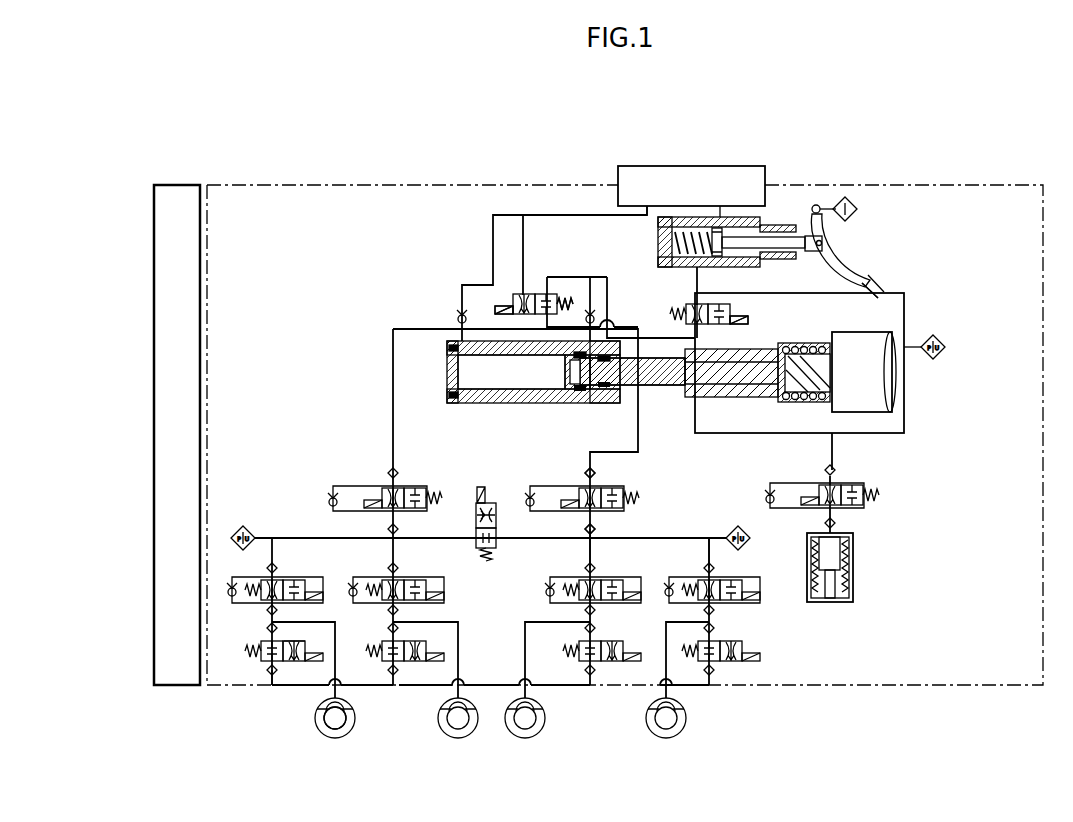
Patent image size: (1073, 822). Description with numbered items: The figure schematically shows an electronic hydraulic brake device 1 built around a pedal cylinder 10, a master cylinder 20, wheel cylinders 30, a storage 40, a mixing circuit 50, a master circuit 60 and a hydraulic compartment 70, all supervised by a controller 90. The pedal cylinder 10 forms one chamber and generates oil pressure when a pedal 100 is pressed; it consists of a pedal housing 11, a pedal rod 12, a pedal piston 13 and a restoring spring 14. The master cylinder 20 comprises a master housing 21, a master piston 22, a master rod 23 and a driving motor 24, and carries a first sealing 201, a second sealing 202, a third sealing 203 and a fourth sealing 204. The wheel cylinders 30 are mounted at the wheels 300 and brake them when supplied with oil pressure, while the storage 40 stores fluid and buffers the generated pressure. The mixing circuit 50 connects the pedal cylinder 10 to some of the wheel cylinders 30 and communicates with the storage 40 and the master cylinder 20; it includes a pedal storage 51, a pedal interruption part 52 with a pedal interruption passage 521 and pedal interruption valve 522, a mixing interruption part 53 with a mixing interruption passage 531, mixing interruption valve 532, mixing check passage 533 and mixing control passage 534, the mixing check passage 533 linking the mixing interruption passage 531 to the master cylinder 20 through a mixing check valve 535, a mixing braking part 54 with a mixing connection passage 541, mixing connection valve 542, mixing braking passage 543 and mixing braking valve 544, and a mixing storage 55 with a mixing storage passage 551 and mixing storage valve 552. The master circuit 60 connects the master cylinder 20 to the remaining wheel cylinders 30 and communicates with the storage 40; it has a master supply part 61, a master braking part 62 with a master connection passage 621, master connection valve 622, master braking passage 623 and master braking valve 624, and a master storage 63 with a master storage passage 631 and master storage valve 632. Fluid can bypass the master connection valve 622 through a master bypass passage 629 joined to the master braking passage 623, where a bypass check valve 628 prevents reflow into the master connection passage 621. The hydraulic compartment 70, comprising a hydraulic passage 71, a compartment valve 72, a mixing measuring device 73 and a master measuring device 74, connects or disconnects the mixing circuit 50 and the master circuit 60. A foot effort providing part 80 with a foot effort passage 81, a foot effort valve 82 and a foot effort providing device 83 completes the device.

The electronic hydraulic brake device 1 is at (1001, 91).
The pedal cylinder 10 is at (745, 112).
The pedal housing 11 is at (762, 250).
The pedal rod 12 is at (812, 232).
The pedal piston 13 is at (800, 243).
The restoring spring 14 is at (722, 230).
The master cylinder 20 is at (312, 350).
The master housing 21 is at (470, 370).
The master piston 22 is at (575, 395).
The master rod 23 is at (600, 405).
The driving motor 24 is at (612, 405).
The wheel cylinder 30 is at (352, 708).
The storage 40 is at (655, 166).
The mixing circuit 50 is at (630, 316).
The pedal storage 51 is at (700, 270).
The pedal interruption part 52 is at (793, 296).
The mixing interruption part 53 is at (463, 112).
The mixing braking part 54 is at (690, 428).
The mixing storage 55 is at (785, 746).
The master circuit 60 is at (222, 620).
The master supply part 61 is at (493, 250).
The master braking part 62 is at (90, 318).
The master storage 63 is at (258, 768).
The hydraulic compartment 70 is at (615, 786).
The hydraulic passage 71 is at (590, 560).
The compartment valve 72 is at (523, 540).
The mixing measuring device 73 is at (628, 600).
The master measuring device 74 is at (486, 562).
The foot effort providing part 80 is at (993, 425).
The foot effort passage 81 is at (905, 432).
The foot effort valve 82 is at (840, 487).
The foot effort providing device 83 is at (853, 553).
The controller 90 is at (178, 184).
The pedal 100 is at (882, 288).
The first sealing 201 is at (450, 347).
The second sealing 202 is at (452, 393).
The third sealing 203 is at (575, 353).
The fourth sealing 204 is at (598, 357).
The wheel 300 is at (345, 725).
The pedal interruption passage 521 is at (720, 298).
The pedal interruption valve 522 is at (728, 322).
The mixing interruption passage 531 is at (562, 296).
The mixing interruption valve 532 is at (502, 300).
The mixing check passage 533 is at (590, 305).
The mixing control passage 534 is at (607, 300).
The mixing check valve 535 is at (528, 292).
The mixing connection passage 541 is at (597, 470).
The mixing connection valve 542 is at (590, 485).
The mixing braking passage 543 is at (595, 577).
The mixing braking valve 544 is at (709, 577).
The mixing storage passage 551 is at (762, 660).
The mixing storage valve 552 is at (728, 658).
The master connection passage 621 is at (450, 346).
The master connection valve 622 is at (333, 484).
The master braking passage 623 is at (262, 577).
The master braking valve 624 is at (353, 577).
The bypass check valve 628 is at (380, 500).
The master bypass passage 629 is at (528, 486).
The master storage passage 631 is at (290, 662).
The master storage valve 632 is at (258, 676).